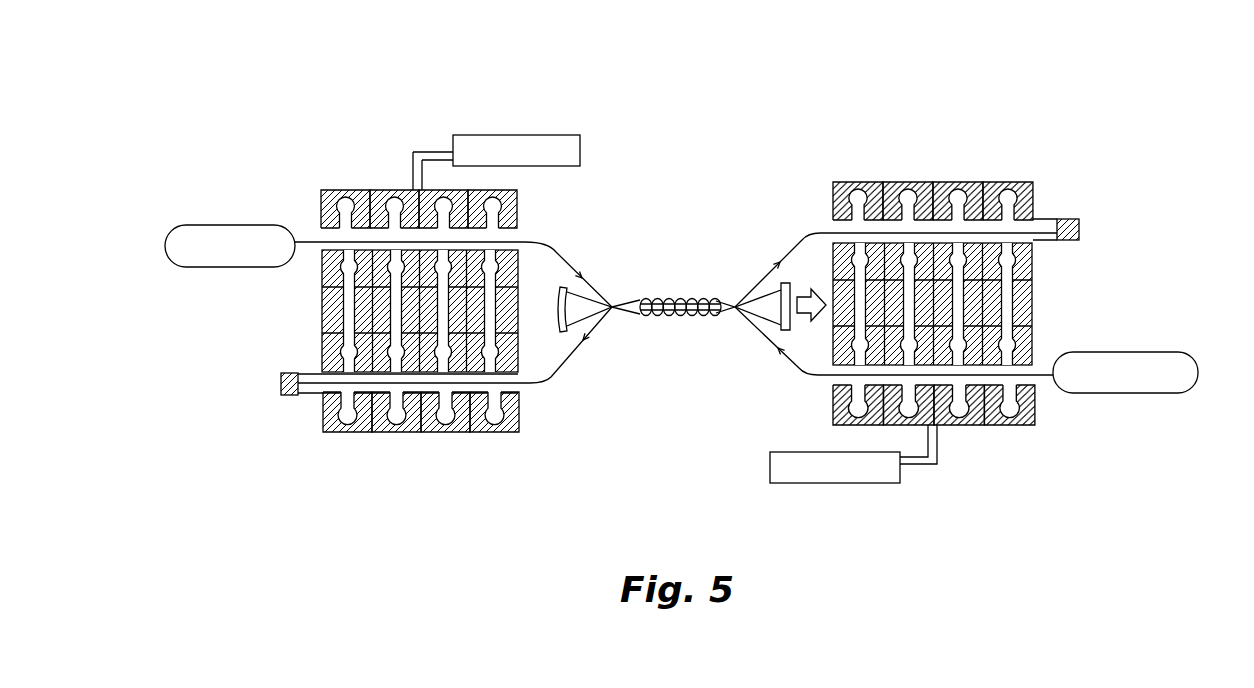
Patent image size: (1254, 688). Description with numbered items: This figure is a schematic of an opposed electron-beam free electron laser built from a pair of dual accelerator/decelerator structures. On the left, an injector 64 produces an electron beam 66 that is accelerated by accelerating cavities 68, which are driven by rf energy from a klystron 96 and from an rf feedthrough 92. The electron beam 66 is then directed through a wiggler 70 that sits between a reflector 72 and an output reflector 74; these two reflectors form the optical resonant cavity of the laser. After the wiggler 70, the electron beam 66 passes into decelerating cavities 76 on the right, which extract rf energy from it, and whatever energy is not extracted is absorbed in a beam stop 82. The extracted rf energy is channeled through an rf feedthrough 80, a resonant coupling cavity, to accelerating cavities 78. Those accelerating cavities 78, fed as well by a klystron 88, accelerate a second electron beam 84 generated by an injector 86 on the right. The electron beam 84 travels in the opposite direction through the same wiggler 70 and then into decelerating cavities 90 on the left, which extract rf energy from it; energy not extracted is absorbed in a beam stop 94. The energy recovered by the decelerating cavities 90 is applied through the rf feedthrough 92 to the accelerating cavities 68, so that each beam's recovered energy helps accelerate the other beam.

The injector 64 is at (205, 225).
The accelerating cavities 68 is at (347, 190).
The klystron 96 is at (528, 135).
The electron beam 66 is at (534, 242).
The rf feedthrough 92 is at (350, 333).
The beam stop 94 is at (281, 382).
The decelerating cavities 90 is at (372, 432).
The reflector 72 is at (564, 335).
The electron beam 84 is at (571, 355).
The wiggler 70 is at (661, 316).
The output reflector 74 is at (772, 283).
The decelerating cavities 76 is at (921, 182).
The beam stop 82 is at (1072, 218).
The rf feedthrough 80 is at (1007, 315).
The injector 86 is at (1128, 393).
The accelerating cavities 78 is at (980, 426).
The klystron 88 is at (843, 483).